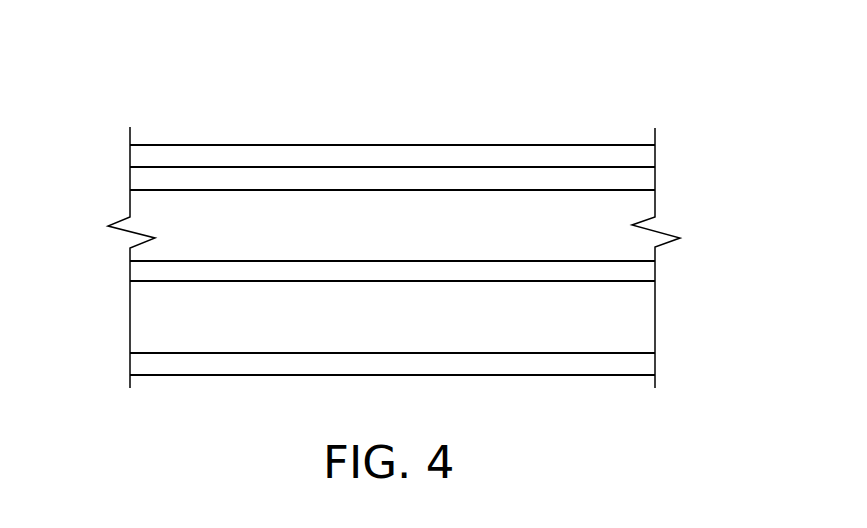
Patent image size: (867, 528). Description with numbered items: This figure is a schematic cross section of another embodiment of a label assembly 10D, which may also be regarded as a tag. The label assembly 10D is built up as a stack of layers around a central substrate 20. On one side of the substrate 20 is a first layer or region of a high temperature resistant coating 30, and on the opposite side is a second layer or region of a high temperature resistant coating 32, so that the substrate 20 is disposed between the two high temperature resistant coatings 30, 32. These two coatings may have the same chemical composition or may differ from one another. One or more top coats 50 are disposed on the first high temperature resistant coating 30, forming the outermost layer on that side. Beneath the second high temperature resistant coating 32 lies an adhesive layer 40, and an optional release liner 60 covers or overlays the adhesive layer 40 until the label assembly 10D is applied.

The label assembly 10D is at (95, 93).
The top coat 50 is at (640, 157).
The first layer of high temperature resistant coating 30 is at (640, 178).
The substrate 20 is at (603, 215).
The second layer of high temperature resistant coating 32 is at (640, 273).
The adhesive layer 40 is at (632, 320).
The release liner 60 is at (647, 365).